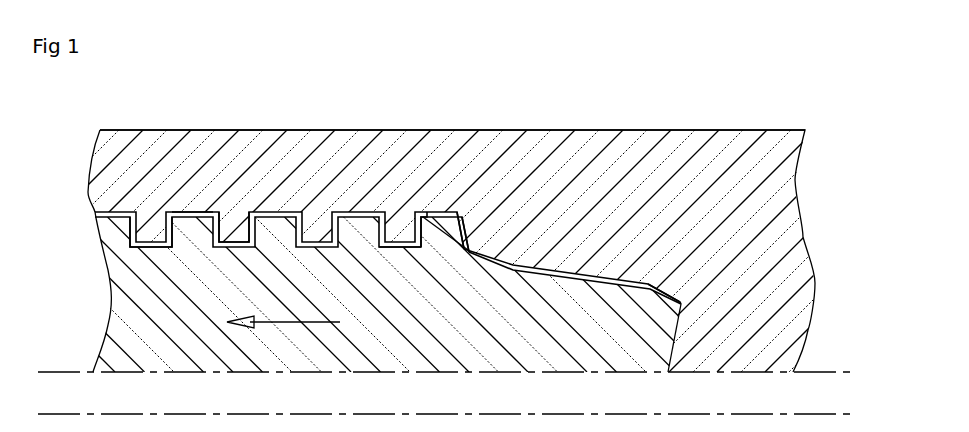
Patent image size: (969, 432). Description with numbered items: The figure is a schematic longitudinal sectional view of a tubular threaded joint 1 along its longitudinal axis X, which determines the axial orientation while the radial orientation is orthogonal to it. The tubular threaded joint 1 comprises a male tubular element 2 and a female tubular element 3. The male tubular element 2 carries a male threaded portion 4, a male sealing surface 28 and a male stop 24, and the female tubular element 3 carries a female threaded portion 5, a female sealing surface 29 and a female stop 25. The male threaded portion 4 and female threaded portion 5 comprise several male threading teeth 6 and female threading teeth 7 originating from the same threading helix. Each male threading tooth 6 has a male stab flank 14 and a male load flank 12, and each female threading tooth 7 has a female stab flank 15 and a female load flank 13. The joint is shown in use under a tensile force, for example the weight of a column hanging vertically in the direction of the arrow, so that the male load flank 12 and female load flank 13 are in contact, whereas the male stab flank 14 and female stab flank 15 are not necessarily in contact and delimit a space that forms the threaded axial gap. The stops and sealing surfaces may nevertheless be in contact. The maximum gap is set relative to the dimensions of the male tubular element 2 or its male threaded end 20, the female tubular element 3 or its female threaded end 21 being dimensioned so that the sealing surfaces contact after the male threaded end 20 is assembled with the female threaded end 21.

The tubular threaded joint 1 is at (765, 101).
The male tubular element 2 is at (162, 318).
The female tubular element 3 is at (703, 207).
The male threaded portion 4 is at (383, 250).
The female threaded portion 5 is at (155, 197).
The male threading tooth 6 is at (194, 210).
The female threading tooth 7 is at (240, 210).
The male load flank 12 is at (455, 235).
The female load flank 13 is at (432, 217).
The male stab flank 14 is at (362, 211).
The female stab flank 15 is at (318, 220).
The male threaded end 20 is at (190, 343).
The female threaded end 21 is at (598, 175).
The male stop 24 is at (667, 344).
The female stop 25 is at (680, 321).
The male sealing surface 28 is at (458, 237).
The female sealing surface 29 is at (507, 237).
The longitudinal axis X is at (800, 413).